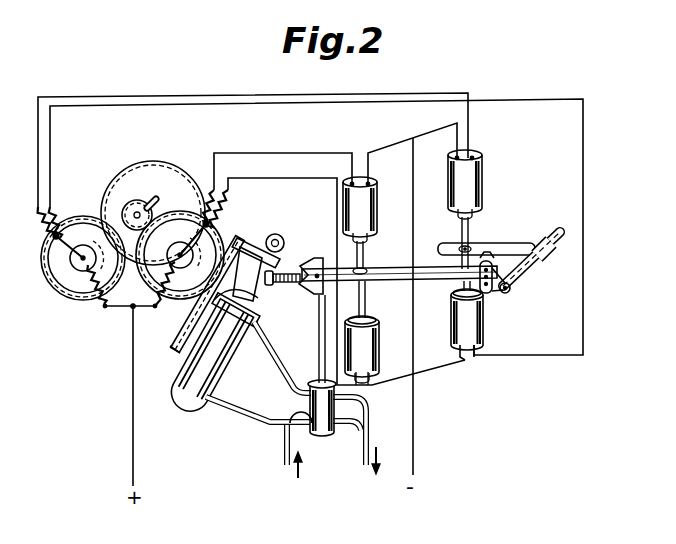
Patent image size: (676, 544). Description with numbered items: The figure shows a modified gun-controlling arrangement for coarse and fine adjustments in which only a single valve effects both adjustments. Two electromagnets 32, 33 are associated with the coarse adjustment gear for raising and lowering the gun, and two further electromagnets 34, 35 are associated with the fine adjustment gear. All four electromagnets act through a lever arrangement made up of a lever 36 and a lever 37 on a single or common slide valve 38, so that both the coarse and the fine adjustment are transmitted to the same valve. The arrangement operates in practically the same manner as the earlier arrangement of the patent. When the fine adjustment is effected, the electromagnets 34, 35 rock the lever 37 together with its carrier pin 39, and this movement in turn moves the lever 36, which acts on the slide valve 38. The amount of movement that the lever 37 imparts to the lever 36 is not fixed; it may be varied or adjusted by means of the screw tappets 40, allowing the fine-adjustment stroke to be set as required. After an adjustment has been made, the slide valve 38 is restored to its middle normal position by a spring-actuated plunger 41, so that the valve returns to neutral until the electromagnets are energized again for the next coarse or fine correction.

The electromagnet 32 is at (378, 210).
The electromagnet 33 is at (380, 343).
The electromagnet 34 is at (483, 178).
The electromagnet 35 is at (484, 328).
The lever 36 is at (428, 266).
The lever 37 is at (517, 257).
The slide valve 38 is at (329, 418).
The carrier pin 39 is at (503, 253).
The screw tappets 40 is at (509, 291).
The spring-actuated plunger 41 is at (297, 287).